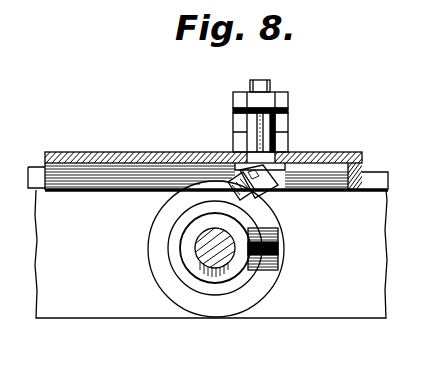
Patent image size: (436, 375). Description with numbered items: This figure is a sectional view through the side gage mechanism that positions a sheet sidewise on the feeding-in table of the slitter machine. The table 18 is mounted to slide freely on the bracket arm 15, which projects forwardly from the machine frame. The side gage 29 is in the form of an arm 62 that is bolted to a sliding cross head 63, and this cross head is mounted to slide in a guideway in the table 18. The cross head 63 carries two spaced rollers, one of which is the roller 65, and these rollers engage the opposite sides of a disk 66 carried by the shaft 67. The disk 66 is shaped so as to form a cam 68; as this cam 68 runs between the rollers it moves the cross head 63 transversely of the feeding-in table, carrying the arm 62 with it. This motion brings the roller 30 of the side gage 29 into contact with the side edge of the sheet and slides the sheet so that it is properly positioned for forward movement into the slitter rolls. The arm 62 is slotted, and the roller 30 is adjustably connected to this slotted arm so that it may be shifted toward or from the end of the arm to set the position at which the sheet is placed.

The bracket arm 15 is at (330, 302).
The table 18 is at (322, 152).
The side gage 29 is at (273, 95).
The roller 30 is at (267, 125).
The arm 62 is at (238, 142).
The sliding cross head 63 is at (277, 190).
The roller 65 is at (279, 232).
The disk 66 is at (163, 259).
The shaft 67 is at (215, 262).
The cam 68 is at (279, 257).